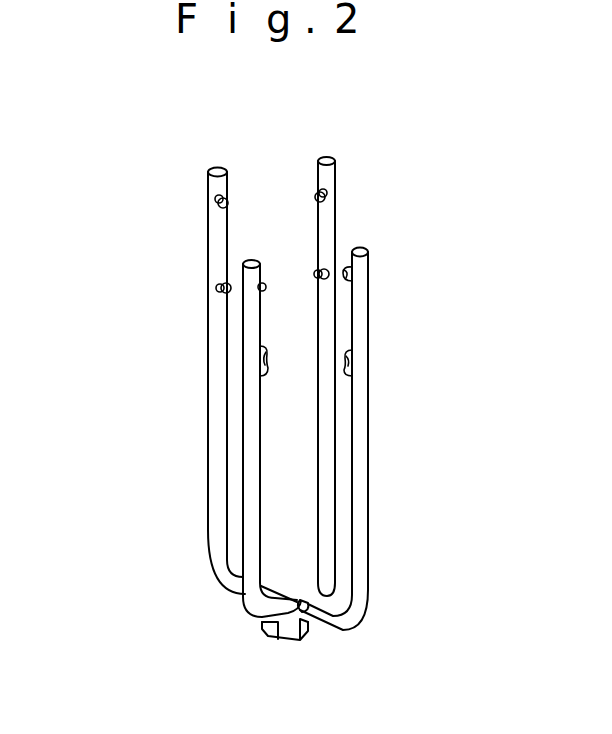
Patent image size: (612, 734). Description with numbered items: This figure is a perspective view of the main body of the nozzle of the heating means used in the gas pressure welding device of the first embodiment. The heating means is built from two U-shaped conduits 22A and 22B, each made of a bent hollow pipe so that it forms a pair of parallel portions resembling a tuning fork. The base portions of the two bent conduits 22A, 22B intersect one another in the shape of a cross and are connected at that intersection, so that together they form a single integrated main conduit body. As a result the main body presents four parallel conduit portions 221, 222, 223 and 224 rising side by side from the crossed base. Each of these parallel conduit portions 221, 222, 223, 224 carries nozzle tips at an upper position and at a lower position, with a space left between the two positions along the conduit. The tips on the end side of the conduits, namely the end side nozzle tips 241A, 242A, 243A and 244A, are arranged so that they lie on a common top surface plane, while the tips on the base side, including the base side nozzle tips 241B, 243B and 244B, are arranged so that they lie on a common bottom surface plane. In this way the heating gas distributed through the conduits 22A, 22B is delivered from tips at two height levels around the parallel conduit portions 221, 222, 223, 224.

The parallel conduit portion 221 is at (366, 407).
The parallel conduit portion 222 is at (334, 214).
The parallel conduit portion 223 is at (208, 222).
The parallel conduit portion 224 is at (245, 477).
The U-shaped conduit 22A is at (367, 537).
The U-shaped conduit 22B is at (243, 527).
The end side nozzle tip 241A is at (344, 280).
The base side nozzle tip 241B is at (350, 376).
The end side nozzle tip 242A is at (316, 196).
The end side nozzle tip 243A is at (228, 207).
The base side nozzle tip 243B is at (216, 289).
The end side nozzle tip 244A is at (266, 282).
The base side nozzle tip 244B is at (260, 380).